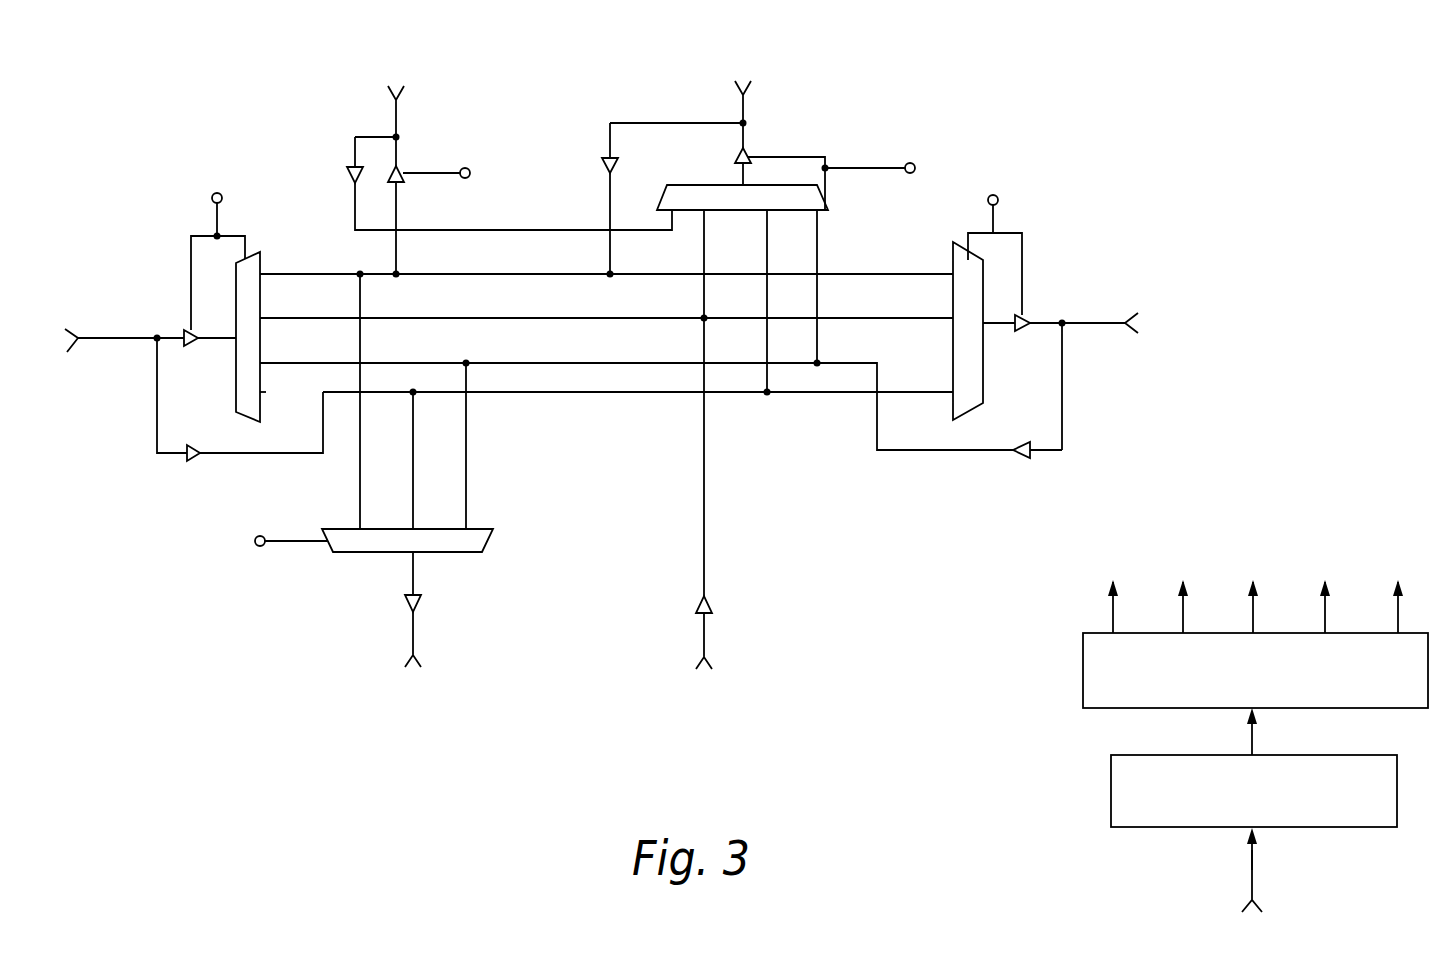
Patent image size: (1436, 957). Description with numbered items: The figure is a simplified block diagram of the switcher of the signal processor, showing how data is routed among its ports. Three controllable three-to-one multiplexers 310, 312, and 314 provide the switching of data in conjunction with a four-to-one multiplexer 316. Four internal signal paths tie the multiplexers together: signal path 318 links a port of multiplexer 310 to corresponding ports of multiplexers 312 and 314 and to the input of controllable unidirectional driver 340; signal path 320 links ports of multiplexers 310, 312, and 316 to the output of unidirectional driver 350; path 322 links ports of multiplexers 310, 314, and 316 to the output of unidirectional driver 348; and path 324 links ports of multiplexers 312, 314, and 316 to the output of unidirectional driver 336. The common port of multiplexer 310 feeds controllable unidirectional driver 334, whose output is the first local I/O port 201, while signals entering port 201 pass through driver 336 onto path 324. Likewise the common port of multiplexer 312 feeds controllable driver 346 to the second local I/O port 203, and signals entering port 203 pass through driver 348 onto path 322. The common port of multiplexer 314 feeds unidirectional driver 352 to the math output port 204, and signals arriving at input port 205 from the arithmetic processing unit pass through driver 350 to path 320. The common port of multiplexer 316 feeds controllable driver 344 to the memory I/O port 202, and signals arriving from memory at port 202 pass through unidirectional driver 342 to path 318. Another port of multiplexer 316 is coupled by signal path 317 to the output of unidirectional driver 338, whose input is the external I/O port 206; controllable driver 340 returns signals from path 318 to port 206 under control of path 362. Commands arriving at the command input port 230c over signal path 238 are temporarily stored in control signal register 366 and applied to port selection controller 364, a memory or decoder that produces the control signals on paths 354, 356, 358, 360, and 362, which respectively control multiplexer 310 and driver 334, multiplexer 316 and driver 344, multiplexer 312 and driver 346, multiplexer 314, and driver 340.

The Local 1 I/O port 201 is at (84, 378).
The memory I/O port 202 is at (748, 88).
The Local 2 I/O port 203 is at (1138, 325).
The Math output port 204 is at (408, 655).
The Math input port 205 is at (702, 655).
The external I/O port 206 is at (400, 98).
The command input port 230c is at (1249, 840).
The control signal path 238 is at (1253, 860).
The three-to-one multiplexer 310 is at (264, 274).
The three-to-one multiplexer 312 is at (975, 422).
The three-to-one multiplexer 314 is at (503, 572).
The four-to-one multiplexer 316 is at (840, 232).
The signal path 317 is at (520, 231).
The signal path 318 is at (360, 422).
The signal path 320 is at (706, 430).
The signal path 322 is at (466, 422).
The signal path 324 is at (414, 422).
The controllable unidirectional driver 334 is at (190, 332).
The unidirectional driver 336 is at (193, 450).
The unidirectional driver 338 is at (350, 165).
The controllable unidirectional driver 340 is at (402, 172).
The unidirectional driver 342 is at (605, 152).
The controllable unidirectional driver 344 is at (738, 154).
The controllable unidirectional driver 346 is at (1030, 326).
The unidirectional driver 348 is at (1032, 452).
The unidirectional driver 350 is at (712, 605).
The unidirectional driver 352 is at (419, 600).
The control signal path 354 is at (216, 210).
The control signal path 356 is at (880, 170).
The control signal path 358 is at (995, 206).
The control signal path 360 is at (289, 530).
The control signal path 362 is at (470, 173).
The port selection controller 364 is at (1082, 665).
The control signal register 366 is at (1110, 793).